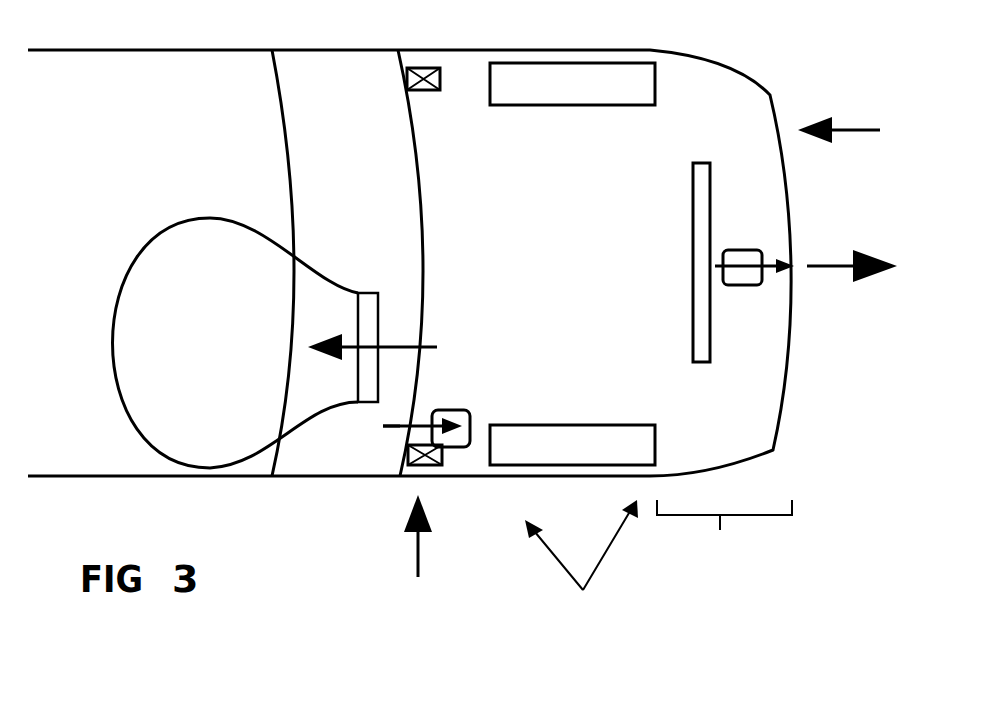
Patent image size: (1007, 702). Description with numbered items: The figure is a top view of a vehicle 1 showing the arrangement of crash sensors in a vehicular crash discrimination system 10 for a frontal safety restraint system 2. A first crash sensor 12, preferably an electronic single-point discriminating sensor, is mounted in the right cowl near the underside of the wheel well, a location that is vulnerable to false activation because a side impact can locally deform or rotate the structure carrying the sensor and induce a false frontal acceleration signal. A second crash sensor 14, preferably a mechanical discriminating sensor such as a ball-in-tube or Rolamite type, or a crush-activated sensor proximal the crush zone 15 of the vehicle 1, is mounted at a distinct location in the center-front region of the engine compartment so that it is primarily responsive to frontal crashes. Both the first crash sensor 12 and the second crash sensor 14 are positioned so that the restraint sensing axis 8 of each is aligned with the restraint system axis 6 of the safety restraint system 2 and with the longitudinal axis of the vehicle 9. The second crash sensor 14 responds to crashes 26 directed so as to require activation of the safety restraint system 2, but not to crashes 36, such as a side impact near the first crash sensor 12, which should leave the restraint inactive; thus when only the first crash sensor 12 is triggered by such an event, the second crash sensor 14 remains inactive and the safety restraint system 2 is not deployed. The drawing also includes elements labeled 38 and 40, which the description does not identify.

The vehicle 1 is at (463, 50).
The safety restraint system 2 is at (365, 405).
The restraint system axis 6 is at (407, 345).
The restraint sensing axis 8 is at (390, 430).
The longitudinal axis of the vehicle 9 is at (840, 270).
The vehicular crash discrimination system 10 is at (581, 560).
The first crash sensor 12 is at (455, 408).
The second crash sensor 14 is at (742, 290).
The crush zone 15 is at (724, 533).
The crashes 26 is at (845, 125).
The crashes 36 is at (418, 548).
The valve 38 is at (427, 92).
The partition panel 40 is at (692, 240).